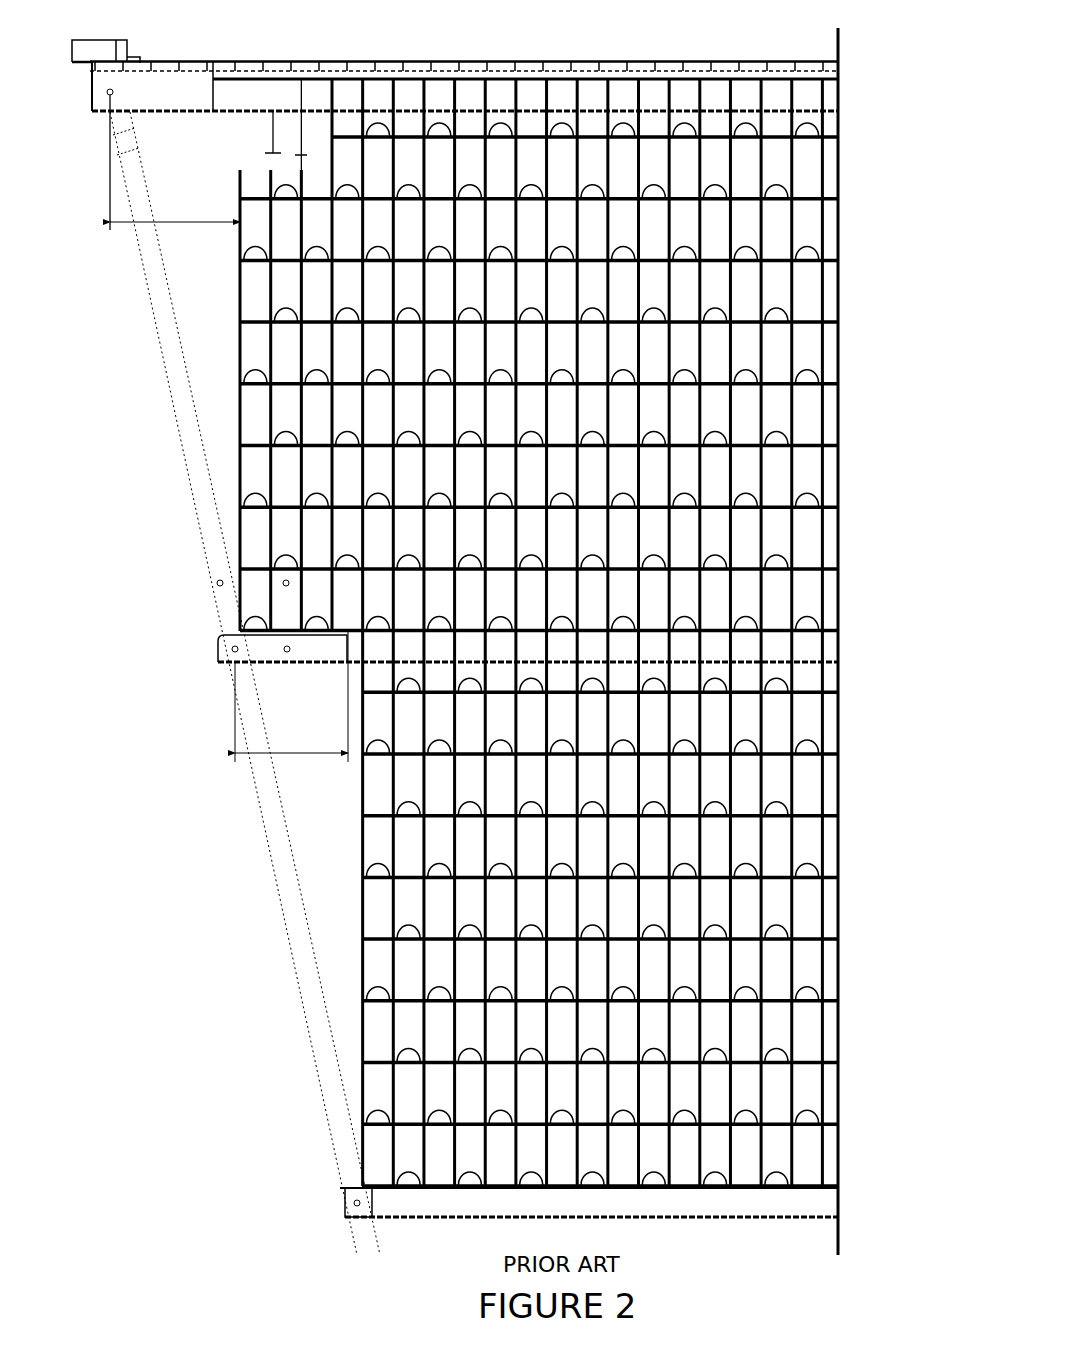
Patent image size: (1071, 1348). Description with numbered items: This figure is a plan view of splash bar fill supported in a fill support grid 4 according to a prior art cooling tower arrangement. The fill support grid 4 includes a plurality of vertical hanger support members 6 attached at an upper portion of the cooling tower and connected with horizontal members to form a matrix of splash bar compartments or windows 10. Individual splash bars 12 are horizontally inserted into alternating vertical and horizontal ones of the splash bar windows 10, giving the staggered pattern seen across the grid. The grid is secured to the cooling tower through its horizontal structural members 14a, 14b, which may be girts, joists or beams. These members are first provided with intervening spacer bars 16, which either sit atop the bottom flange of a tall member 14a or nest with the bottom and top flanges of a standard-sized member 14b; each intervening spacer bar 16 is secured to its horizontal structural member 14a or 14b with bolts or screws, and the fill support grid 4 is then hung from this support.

The fill support grid 4 is at (825, 232).
The vertical hanger support members 6 is at (382, 197).
The splash bar windows 10 is at (782, 413).
The splash bars 12 is at (250, 357).
The horizontal structural member 14a is at (92, 107).
The horizontal structural member 14b is at (225, 658).
The intervening spacer bar 16 is at (213, 66).